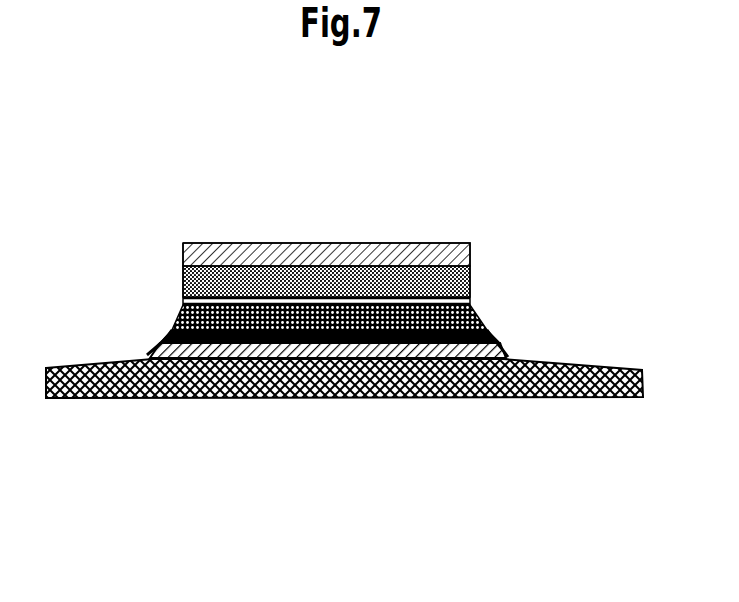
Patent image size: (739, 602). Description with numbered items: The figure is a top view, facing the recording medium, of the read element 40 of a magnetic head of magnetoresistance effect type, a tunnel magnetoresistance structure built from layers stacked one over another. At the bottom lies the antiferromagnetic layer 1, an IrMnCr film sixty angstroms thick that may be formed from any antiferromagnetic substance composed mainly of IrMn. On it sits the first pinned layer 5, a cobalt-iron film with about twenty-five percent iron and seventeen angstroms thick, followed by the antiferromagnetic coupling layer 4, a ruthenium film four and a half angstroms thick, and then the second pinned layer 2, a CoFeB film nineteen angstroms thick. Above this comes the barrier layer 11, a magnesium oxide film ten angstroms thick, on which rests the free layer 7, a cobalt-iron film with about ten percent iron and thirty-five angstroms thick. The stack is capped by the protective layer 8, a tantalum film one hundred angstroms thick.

The read element 40 is at (515, 200).
The antiferromagnetic layer 1 is at (289, 362).
The second pinned layer 2 is at (322, 348).
The antiferromagnetic coupling layer 4 is at (280, 336).
The first pinned layer 5 is at (303, 316).
The barrier layer 11 is at (346, 300).
The free layer 7 is at (380, 276).
The protective layer 8 is at (412, 258).